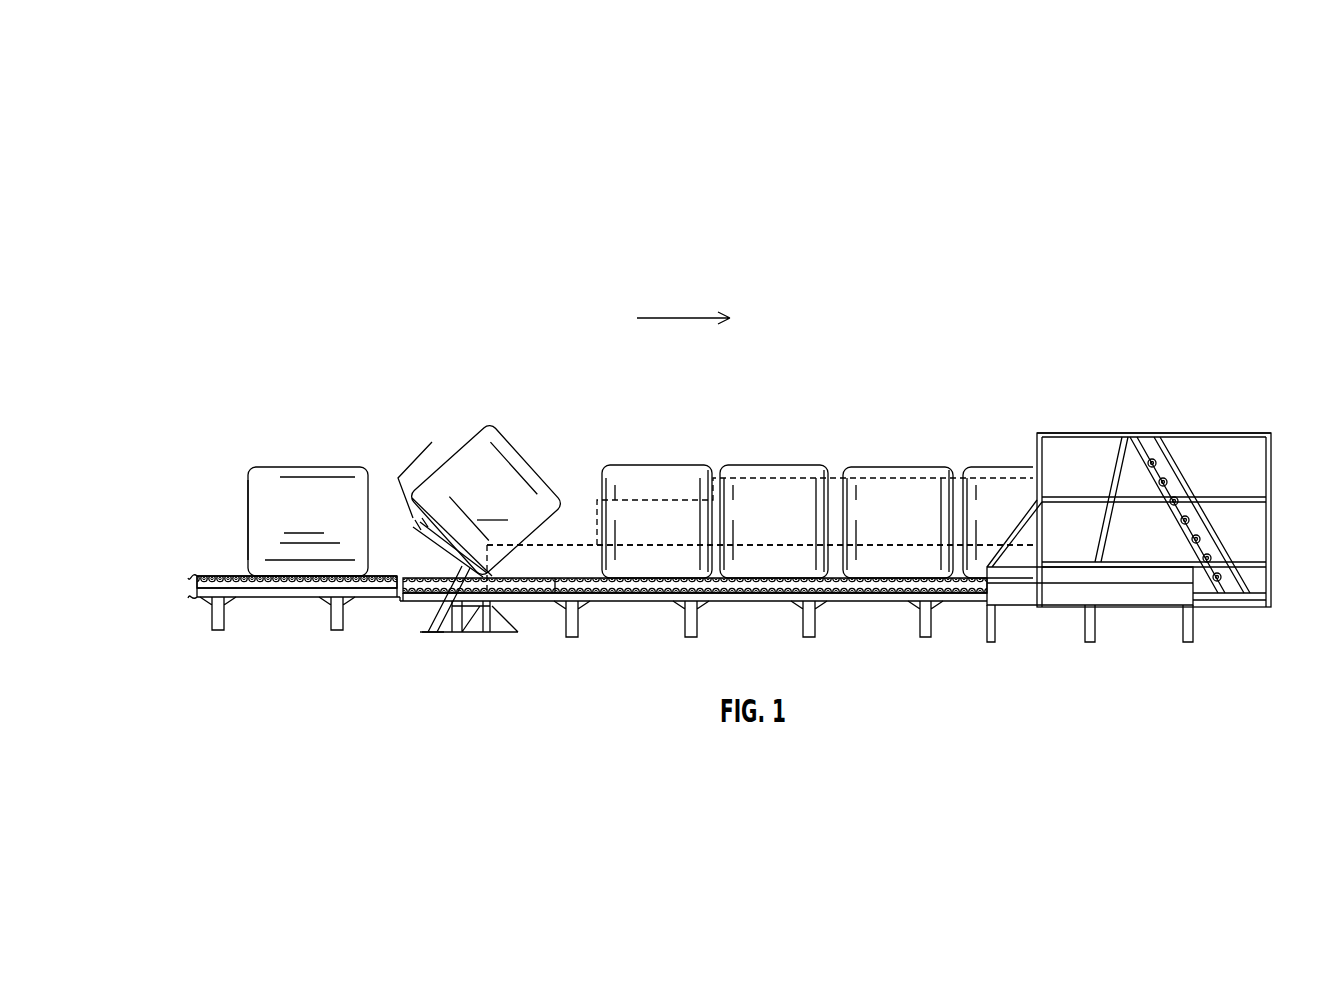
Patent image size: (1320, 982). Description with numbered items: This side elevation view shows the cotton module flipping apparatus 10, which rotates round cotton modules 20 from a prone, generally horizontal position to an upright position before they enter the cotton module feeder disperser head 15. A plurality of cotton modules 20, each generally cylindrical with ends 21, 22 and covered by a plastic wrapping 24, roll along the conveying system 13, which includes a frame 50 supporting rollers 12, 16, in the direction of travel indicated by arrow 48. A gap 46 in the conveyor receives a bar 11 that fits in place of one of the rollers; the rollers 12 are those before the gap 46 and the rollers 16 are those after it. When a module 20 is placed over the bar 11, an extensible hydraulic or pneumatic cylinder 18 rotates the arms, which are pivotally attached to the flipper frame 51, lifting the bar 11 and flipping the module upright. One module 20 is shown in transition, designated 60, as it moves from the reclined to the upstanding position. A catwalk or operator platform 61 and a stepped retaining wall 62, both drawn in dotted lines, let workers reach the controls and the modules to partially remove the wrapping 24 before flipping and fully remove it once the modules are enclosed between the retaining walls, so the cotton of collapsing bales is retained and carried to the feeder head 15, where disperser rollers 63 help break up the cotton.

The cotton module flipping apparatus 10 is at (1039, 206).
The bar 11 is at (408, 482).
The rollers 12 is at (197, 578).
The conveying system 13 is at (179, 444).
The cotton module feeder disperser head 15 is at (1193, 352).
The rollers 16 is at (555, 578).
The cylinder 18 is at (430, 618).
The cotton module 20 is at (325, 467).
The end 21 is at (383, 492).
The end 22 is at (248, 495).
The wrapping 24 is at (650, 470).
The gap 46 is at (404, 570).
The arrow 48 is at (676, 318).
The frame 50 is at (225, 616).
The frame 51 is at (480, 636).
The transition position 60 is at (509, 342).
The catwalk 61 is at (543, 548).
The retaining wall 62 is at (625, 497).
The disperser rollers 63 is at (1180, 498).